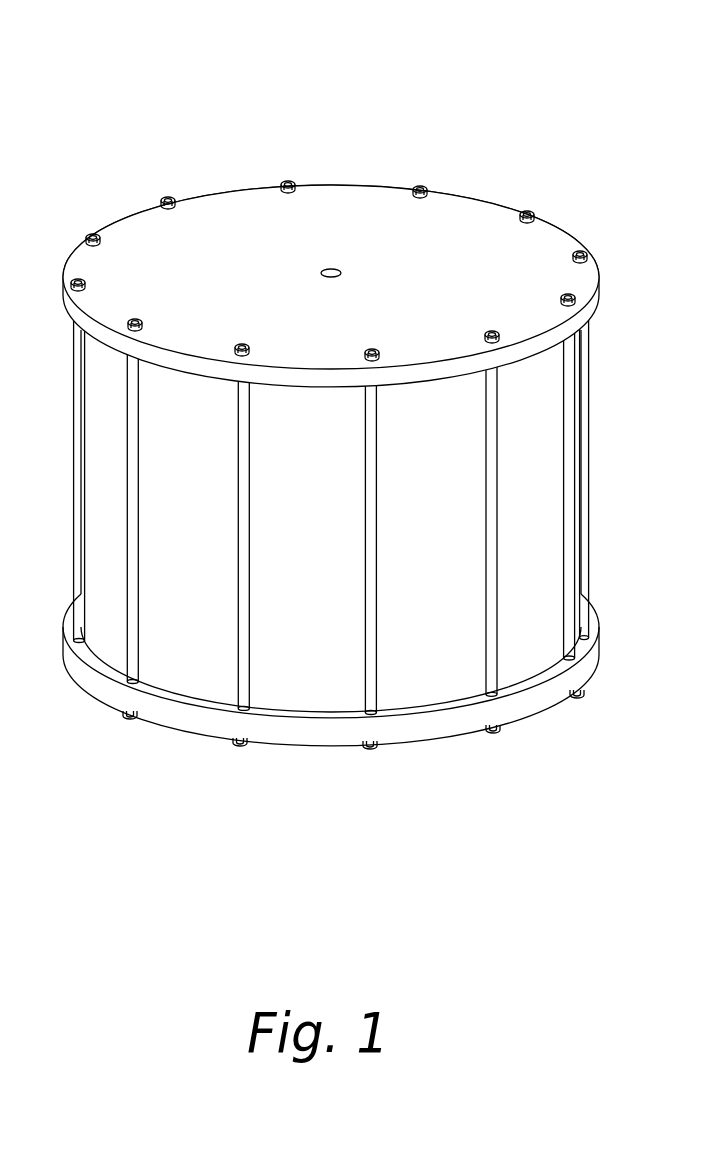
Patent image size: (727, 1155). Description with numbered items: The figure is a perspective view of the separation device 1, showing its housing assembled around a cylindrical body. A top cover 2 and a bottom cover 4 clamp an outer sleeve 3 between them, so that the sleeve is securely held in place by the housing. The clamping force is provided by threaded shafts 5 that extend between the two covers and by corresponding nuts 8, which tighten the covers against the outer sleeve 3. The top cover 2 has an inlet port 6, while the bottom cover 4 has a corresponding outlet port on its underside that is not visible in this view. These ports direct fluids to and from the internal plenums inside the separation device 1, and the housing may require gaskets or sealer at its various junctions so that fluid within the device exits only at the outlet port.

The separation device 1 is at (100, 178).
The top cover 2 is at (437, 265).
The outer sleeve 3 is at (408, 462).
The bottom cover 4 is at (112, 687).
The threaded shafts 5 is at (492, 537).
The inlet port 6 is at (331, 270).
The nuts 8 is at (376, 748).